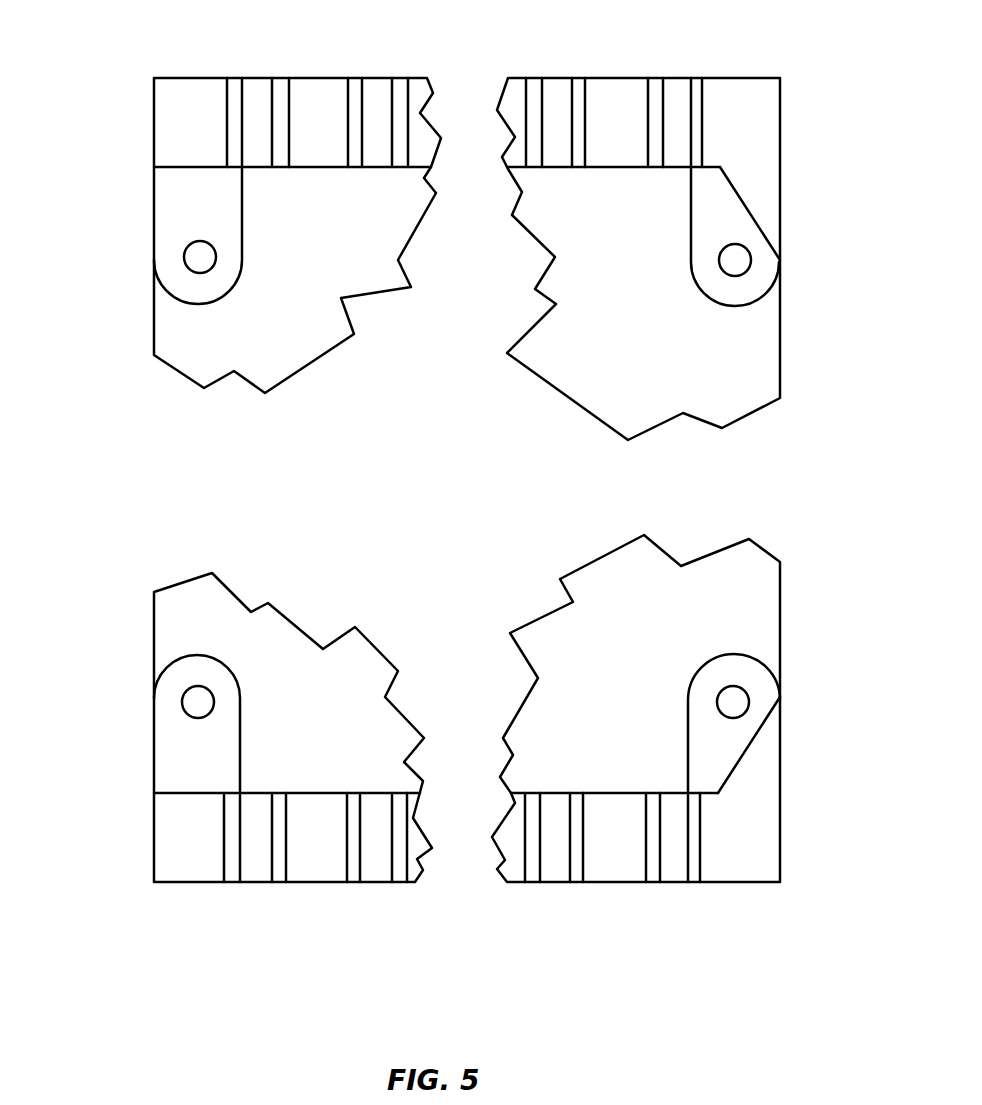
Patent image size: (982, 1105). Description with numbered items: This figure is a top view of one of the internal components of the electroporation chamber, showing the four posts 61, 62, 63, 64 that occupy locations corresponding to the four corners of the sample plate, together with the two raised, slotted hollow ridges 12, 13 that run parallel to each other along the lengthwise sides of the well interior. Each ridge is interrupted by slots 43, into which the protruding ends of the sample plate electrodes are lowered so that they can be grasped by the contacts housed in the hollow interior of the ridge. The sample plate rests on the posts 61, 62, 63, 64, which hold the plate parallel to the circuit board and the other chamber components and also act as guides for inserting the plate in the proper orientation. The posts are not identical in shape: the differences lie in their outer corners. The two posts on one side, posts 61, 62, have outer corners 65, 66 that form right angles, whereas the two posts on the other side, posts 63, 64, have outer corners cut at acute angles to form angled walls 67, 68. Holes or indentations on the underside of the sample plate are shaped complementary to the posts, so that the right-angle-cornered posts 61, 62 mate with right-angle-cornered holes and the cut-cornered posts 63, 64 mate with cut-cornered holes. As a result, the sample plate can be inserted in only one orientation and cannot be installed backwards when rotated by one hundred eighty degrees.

The hollow ridge 12 is at (745, 108).
The hollow ridge 13 is at (735, 858).
The slots 43 is at (380, 95).
The post 61 is at (175, 215).
The post 62 is at (168, 742).
The post 63 is at (725, 200).
The post 64 is at (763, 695).
The outer corner 65 is at (150, 163).
The outer corner 66 is at (148, 793).
The angled wall 67 is at (763, 223).
The angled wall 68 is at (752, 747).